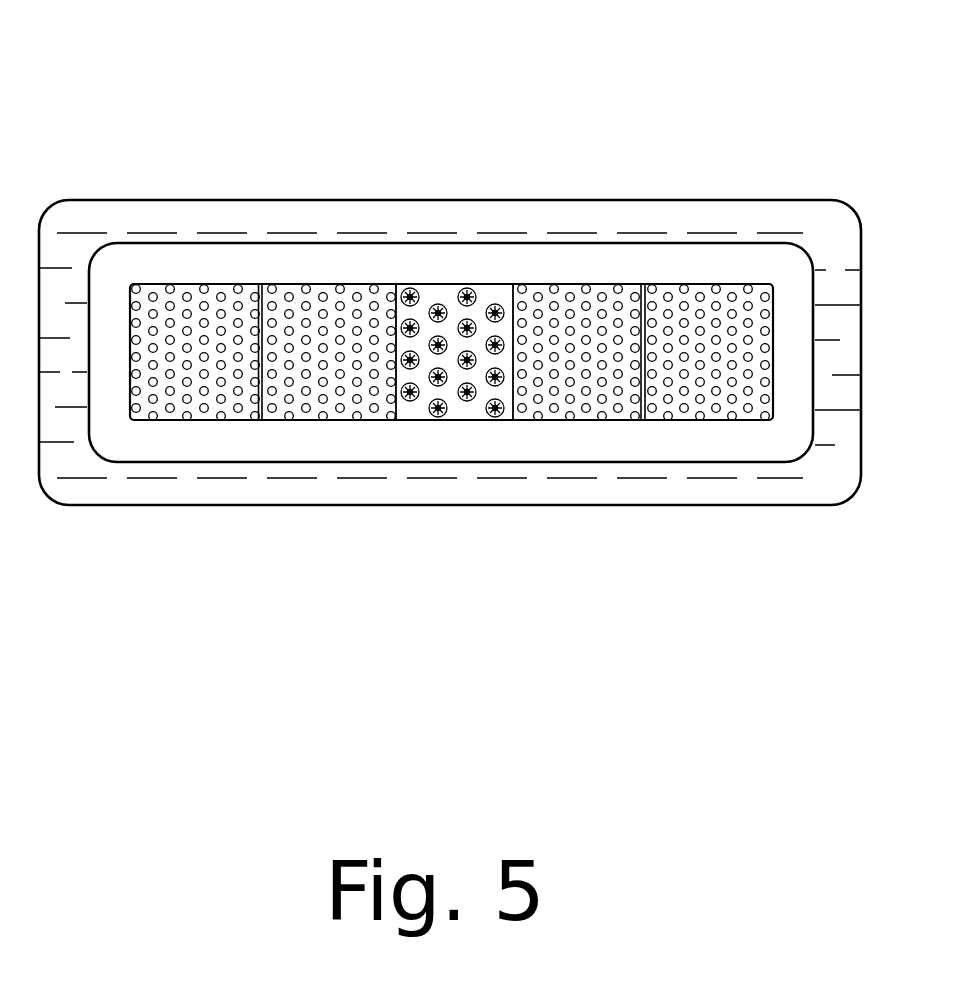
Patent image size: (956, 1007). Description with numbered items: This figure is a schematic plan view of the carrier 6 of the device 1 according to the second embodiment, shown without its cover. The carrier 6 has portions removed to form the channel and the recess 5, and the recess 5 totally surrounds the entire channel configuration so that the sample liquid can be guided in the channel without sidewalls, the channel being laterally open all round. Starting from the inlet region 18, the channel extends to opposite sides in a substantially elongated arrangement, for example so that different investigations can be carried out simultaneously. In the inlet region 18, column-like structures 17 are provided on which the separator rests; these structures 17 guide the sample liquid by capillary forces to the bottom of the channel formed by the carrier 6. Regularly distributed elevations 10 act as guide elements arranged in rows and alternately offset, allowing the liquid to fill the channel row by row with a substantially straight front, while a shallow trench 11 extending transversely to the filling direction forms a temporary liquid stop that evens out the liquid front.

The device 1 is at (180, 150).
The recess 5 is at (631, 265).
The carrier 6 is at (750, 225).
The elevations 10 is at (153, 398).
The trench 11 is at (260, 420).
The column-like structures 17 is at (435, 415).
The inlet region 18 is at (455, 288).